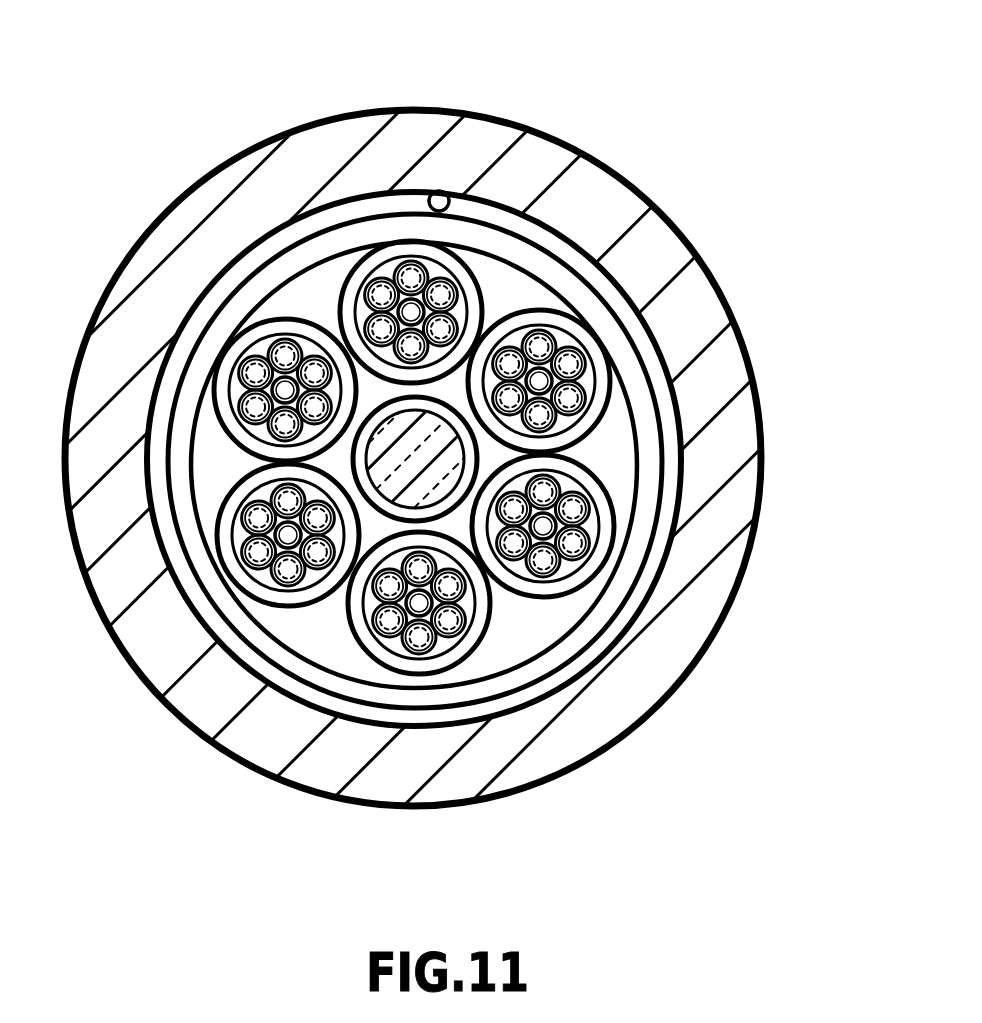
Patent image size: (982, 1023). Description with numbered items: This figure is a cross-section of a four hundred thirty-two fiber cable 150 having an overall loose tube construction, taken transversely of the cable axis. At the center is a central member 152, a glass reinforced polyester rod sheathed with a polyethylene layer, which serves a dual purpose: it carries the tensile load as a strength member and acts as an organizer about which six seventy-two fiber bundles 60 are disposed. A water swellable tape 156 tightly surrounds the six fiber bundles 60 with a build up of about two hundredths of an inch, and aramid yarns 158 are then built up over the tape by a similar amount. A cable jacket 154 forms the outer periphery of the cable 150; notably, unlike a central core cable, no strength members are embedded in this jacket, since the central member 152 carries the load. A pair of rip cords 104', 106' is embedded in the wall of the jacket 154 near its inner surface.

The loose tube cable 150 is at (470, 85).
The cable jacket 154 is at (528, 172).
The aramid yarns 158 is at (597, 278).
The water swellable tape 156 is at (617, 347).
The rip cord 104' is at (620, 191).
The rip cord 106' is at (620, 184).
The central member 152 is at (445, 466).
The 72-fiber bundle 60 is at (549, 592).